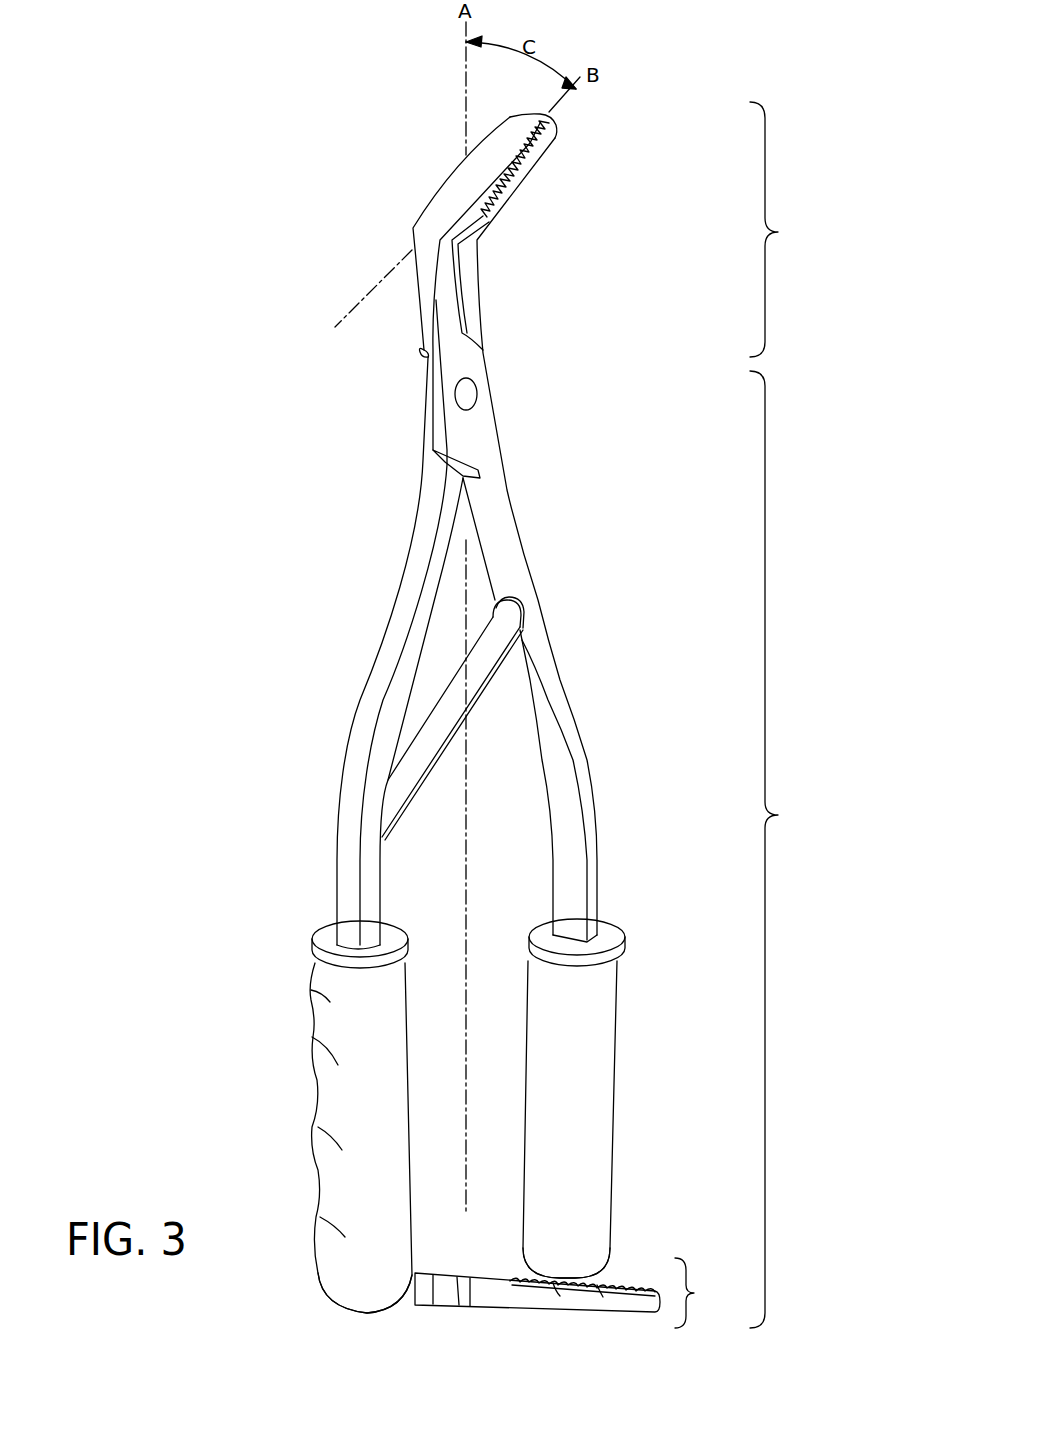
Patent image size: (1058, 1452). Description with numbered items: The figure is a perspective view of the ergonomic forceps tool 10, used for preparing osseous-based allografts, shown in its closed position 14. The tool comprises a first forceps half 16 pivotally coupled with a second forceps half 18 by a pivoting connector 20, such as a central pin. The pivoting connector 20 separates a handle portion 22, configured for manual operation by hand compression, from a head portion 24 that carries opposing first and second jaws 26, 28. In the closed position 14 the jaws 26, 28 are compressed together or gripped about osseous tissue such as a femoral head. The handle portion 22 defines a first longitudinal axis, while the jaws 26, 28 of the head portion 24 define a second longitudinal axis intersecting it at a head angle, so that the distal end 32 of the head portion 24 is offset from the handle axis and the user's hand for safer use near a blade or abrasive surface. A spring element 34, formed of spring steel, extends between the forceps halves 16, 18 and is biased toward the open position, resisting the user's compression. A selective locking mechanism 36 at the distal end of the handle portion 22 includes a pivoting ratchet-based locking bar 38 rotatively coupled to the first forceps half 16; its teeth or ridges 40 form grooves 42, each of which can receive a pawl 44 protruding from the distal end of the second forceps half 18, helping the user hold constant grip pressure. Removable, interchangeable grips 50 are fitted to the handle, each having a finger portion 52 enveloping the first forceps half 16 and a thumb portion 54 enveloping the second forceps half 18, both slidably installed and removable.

The ergonomic forceps tool 10 is at (336, 522).
The closed position 14 is at (565, 167).
The first forceps half 16 is at (342, 860).
The second forceps half 18 is at (596, 870).
The pivoting connector 20 is at (469, 394).
The handle portion 22 is at (779, 849).
The head portion 24 is at (779, 229).
The first jaw 26 is at (472, 227).
The second jaw 28 is at (439, 205).
The distal end 32 is at (556, 121).
The spring element 34 is at (478, 676).
The selective locking mechanism 36 is at (569, 1302).
The ratchet-based locking bar 38 is at (488, 1295).
The teeth or ridges 40 is at (513, 1283).
The grooves 42 is at (558, 1292).
The pawl 44 is at (602, 1290).
The grips 50 is at (375, 1318).
The finger portion 52 is at (320, 1000).
The thumb portion 54 is at (603, 1020).